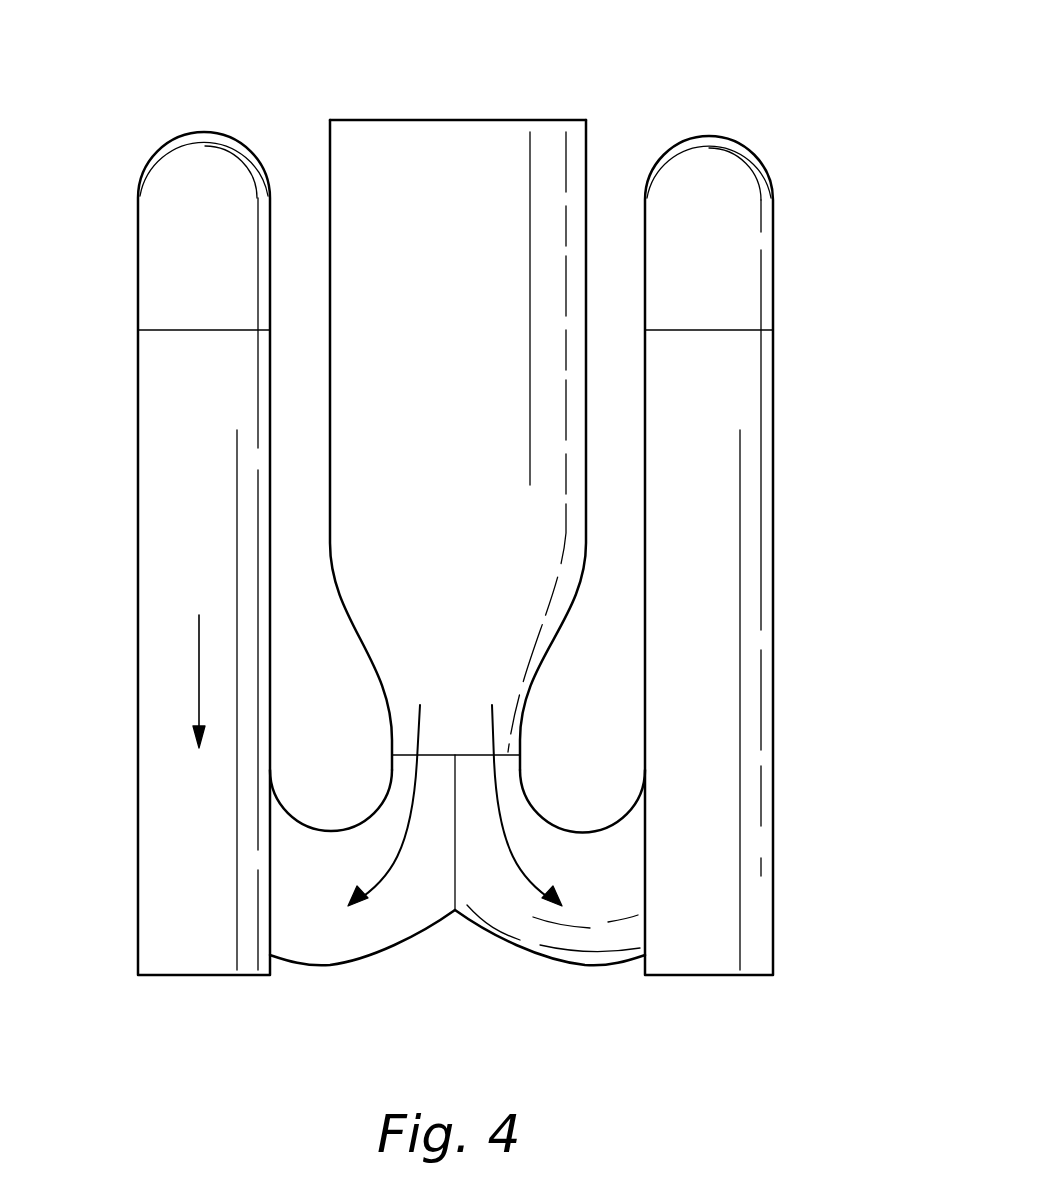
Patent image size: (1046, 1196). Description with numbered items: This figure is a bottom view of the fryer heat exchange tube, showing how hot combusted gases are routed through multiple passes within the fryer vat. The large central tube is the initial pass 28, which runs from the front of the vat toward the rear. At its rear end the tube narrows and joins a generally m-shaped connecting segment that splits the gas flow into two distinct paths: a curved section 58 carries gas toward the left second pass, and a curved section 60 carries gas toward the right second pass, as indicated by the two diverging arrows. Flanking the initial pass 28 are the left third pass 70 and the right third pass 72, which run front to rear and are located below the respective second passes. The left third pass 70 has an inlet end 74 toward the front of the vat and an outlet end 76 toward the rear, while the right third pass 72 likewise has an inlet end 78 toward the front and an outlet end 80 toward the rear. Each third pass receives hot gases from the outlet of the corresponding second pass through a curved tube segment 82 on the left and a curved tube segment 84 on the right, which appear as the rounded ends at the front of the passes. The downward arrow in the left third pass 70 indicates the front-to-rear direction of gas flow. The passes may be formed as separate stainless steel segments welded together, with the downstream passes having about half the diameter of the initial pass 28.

The initial pass 28 is at (547, 142).
The curved section 58 is at (337, 920).
The curved section 60 is at (586, 912).
The left third pass 70 is at (172, 650).
The right third pass 72 is at (733, 650).
The inlet end 74 is at (185, 347).
The outlet end 76 is at (190, 955).
The inlet end 78 is at (715, 353).
The outlet end 80 is at (712, 953).
The curved tube segment 82 is at (205, 172).
The curved tube segment 84 is at (723, 190).